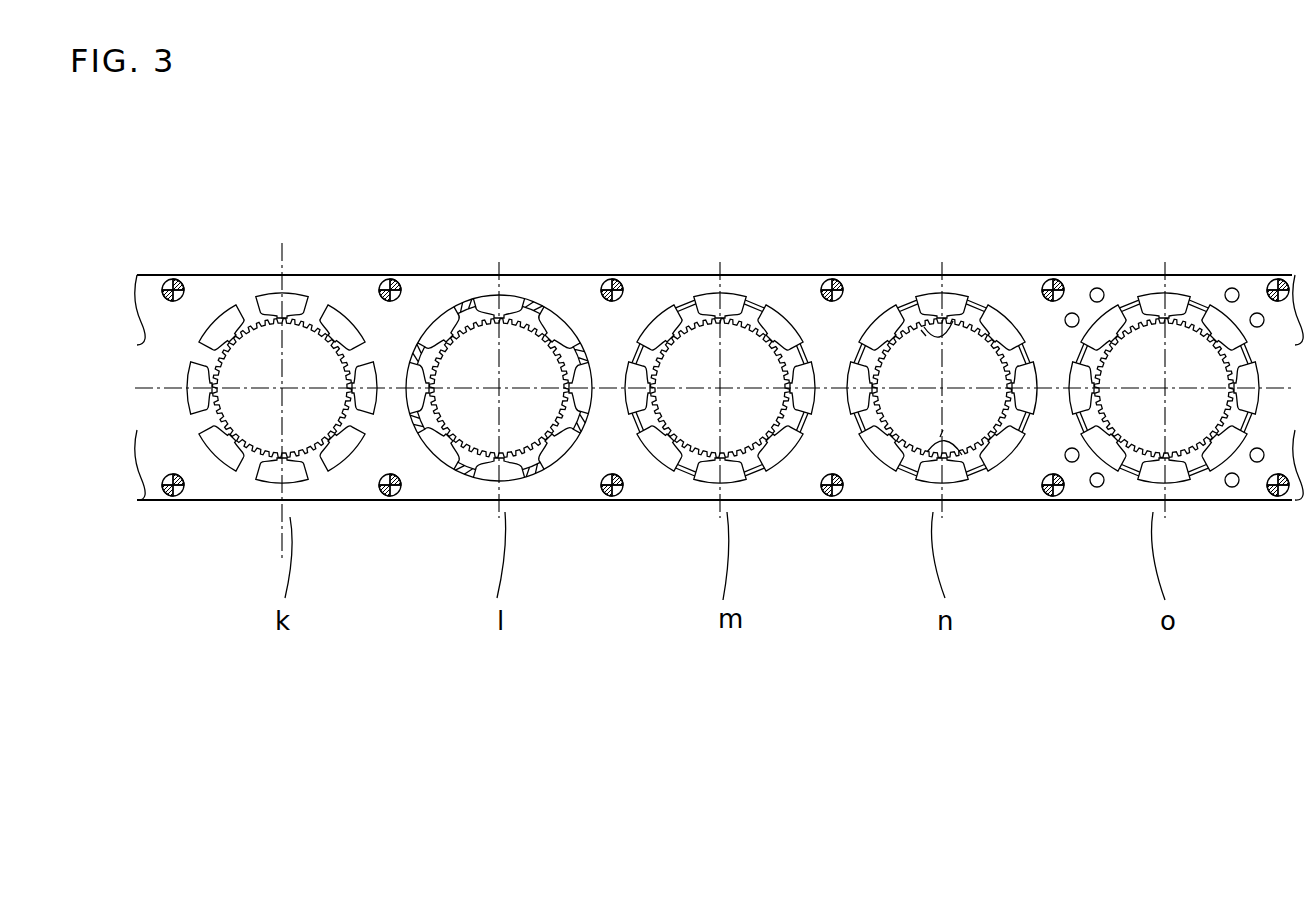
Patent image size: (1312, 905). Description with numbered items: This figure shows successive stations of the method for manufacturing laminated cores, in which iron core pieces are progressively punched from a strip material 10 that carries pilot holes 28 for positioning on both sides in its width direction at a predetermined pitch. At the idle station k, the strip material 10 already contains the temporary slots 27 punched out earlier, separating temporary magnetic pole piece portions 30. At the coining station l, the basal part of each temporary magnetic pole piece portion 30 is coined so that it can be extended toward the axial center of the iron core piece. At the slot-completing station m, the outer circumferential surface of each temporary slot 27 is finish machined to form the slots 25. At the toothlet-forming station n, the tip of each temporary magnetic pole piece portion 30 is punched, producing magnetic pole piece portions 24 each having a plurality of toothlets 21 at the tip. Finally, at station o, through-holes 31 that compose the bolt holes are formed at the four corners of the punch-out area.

The strip material 10 is at (240, 292).
The toothlets 21 is at (953, 335).
The magnetic pole piece portions 24 is at (917, 320).
The slots 25 is at (708, 300).
The temporary slots 27 is at (293, 300).
The pilot holes 28 is at (173, 277).
The temporary magnetic pole piece portions 30 is at (470, 316).
The through-holes 31 is at (1072, 313).